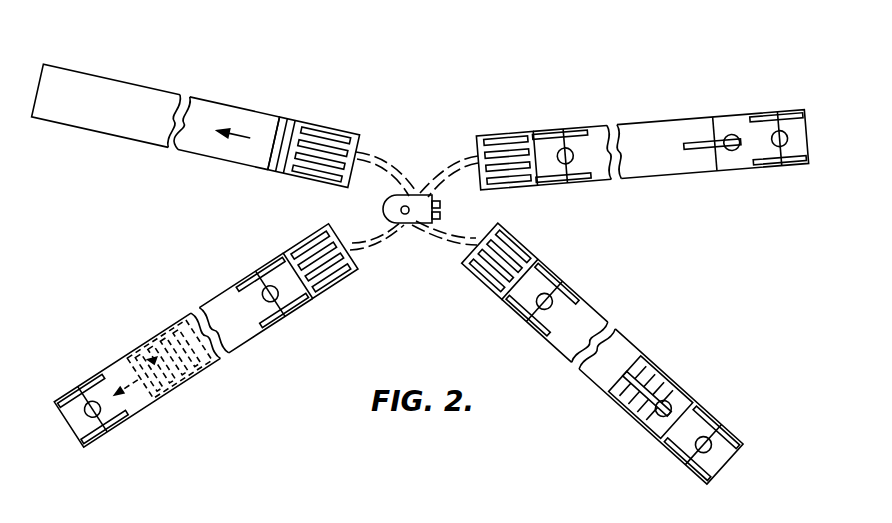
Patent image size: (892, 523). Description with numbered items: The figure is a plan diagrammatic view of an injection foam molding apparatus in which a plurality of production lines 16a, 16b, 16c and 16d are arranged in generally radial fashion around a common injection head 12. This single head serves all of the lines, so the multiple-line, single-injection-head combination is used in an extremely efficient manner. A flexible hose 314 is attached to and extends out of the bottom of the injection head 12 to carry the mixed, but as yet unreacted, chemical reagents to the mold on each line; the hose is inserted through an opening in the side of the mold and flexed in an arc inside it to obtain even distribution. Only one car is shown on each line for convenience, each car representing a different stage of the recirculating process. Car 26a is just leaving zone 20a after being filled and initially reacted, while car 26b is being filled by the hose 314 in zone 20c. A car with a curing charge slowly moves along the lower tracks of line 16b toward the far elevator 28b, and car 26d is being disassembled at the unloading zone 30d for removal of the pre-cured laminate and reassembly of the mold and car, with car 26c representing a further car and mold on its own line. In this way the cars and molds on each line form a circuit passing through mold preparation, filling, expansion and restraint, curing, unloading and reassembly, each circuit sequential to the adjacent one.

The injection head 12 is at (407, 199).
The flexible hose 314 is at (389, 161).
The production line 16a is at (236, 95).
The production line 16b is at (260, 268).
The production line 16c is at (720, 96).
The production line 16d is at (665, 331).
The zone 20a is at (339, 134).
The zone 20c is at (495, 132).
The car 26a is at (292, 119).
The car 26b is at (155, 345).
The car 26c is at (530, 131).
The car 26d is at (670, 362).
The far elevator 28b is at (79, 392).
The unloading zone 30d is at (650, 410).